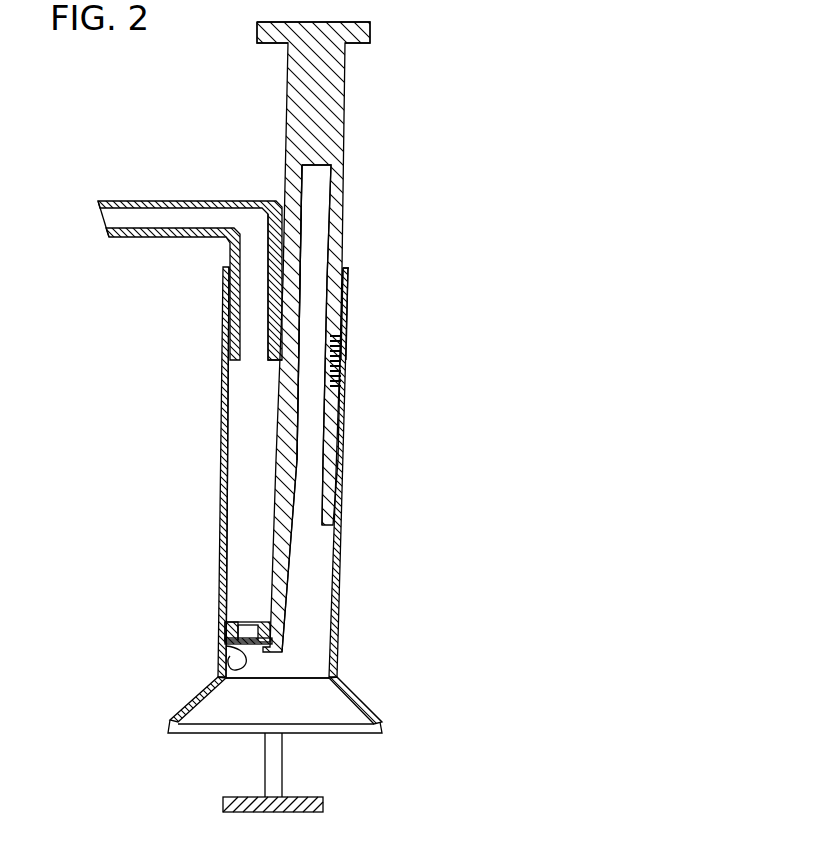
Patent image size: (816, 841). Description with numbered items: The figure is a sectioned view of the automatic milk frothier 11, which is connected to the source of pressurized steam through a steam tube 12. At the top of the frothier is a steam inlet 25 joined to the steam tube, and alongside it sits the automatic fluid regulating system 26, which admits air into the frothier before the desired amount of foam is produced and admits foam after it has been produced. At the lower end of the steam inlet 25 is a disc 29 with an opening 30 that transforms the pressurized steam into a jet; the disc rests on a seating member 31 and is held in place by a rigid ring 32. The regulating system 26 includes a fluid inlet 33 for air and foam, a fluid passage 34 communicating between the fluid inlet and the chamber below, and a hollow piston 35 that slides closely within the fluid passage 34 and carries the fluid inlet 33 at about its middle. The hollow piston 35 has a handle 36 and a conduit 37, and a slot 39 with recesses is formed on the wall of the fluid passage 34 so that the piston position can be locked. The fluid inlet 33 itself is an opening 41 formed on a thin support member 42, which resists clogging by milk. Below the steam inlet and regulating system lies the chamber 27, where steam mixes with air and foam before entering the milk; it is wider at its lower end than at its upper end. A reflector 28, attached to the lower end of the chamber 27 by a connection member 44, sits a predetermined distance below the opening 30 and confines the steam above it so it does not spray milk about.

The automatic milk frothier 11 is at (205, 398).
The steam tube 12 is at (173, 200).
The steam inlet 25 is at (245, 368).
The automatic fluid regulating system 26 is at (355, 118).
The chamber 27 is at (290, 688).
The reflector 28 is at (223, 797).
The disc 29 is at (228, 676).
The opening 30 is at (246, 620).
The seating member 31 is at (235, 658).
The rigid ring 32 is at (232, 622).
The fluid inlet 33 is at (348, 348).
The fluid passage 34 is at (307, 537).
The hollow piston 35 is at (345, 207).
The handle 36 is at (372, 38).
The conduit 37 is at (320, 245).
The slot 39 is at (345, 300).
The opening 41 is at (345, 362).
The support member 42 is at (342, 383).
The connection member 44 is at (283, 770).